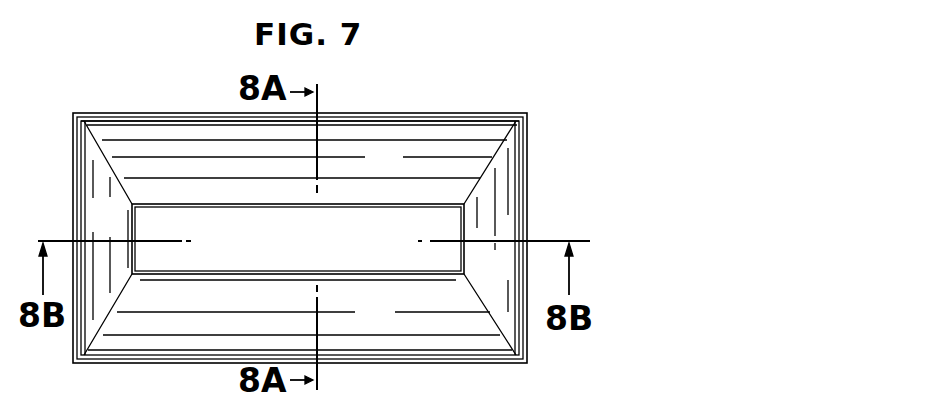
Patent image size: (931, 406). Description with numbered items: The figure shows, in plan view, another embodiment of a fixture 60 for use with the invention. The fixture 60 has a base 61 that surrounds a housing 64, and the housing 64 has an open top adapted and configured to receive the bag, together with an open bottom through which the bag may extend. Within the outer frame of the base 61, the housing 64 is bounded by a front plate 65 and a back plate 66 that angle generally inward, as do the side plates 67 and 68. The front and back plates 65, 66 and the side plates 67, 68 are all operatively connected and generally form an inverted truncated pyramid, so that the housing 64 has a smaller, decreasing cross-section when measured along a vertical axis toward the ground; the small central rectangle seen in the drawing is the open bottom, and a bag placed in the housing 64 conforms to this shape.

The fixture 60 is at (541, 102).
The base 61 is at (73, 183).
The housing 64 is at (82, 117).
The front plate 65 is at (398, 170).
The back plate 66 is at (388, 334).
The side plate 67 is at (500, 279).
The side plate 68 is at (120, 226).